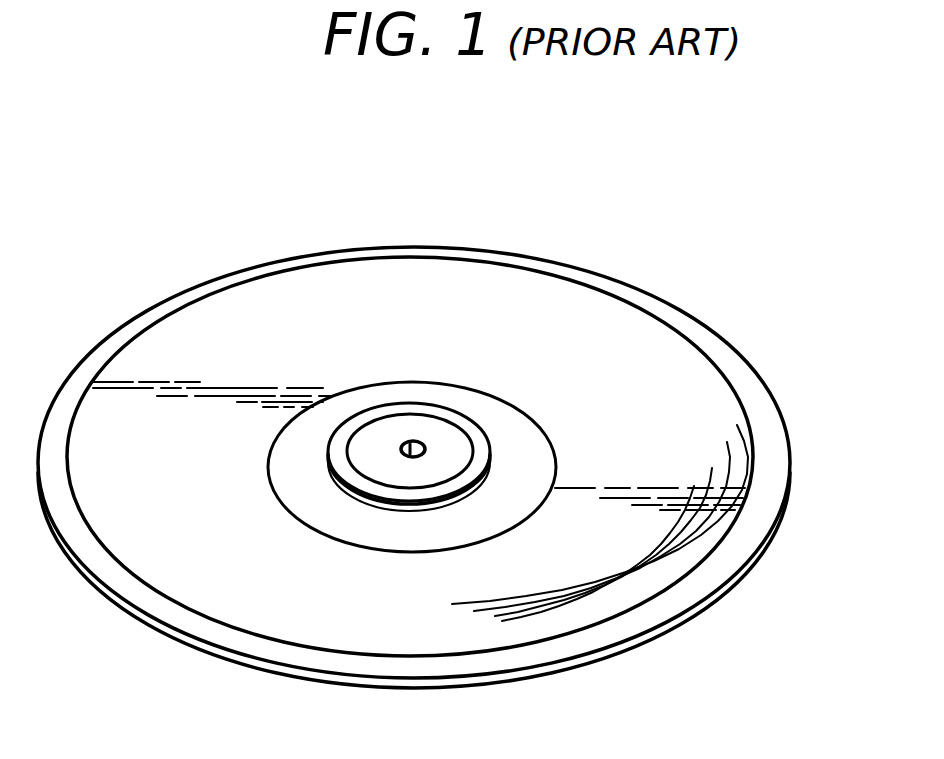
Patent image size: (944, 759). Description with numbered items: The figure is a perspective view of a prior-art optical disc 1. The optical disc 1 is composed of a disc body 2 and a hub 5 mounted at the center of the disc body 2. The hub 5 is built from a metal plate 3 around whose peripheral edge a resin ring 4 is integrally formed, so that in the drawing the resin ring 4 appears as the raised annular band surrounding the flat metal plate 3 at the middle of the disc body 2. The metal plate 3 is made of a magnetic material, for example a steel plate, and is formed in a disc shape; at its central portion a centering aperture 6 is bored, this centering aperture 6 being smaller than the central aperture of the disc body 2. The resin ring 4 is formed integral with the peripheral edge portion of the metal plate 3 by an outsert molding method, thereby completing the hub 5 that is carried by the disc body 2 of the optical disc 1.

The optical disc 1 is at (643, 245).
The disc body 2 is at (224, 318).
The metal plate 3 is at (377, 458).
The resin ring 4 is at (483, 450).
The hub 5 is at (402, 403).
The centering aperture 6 is at (415, 442).